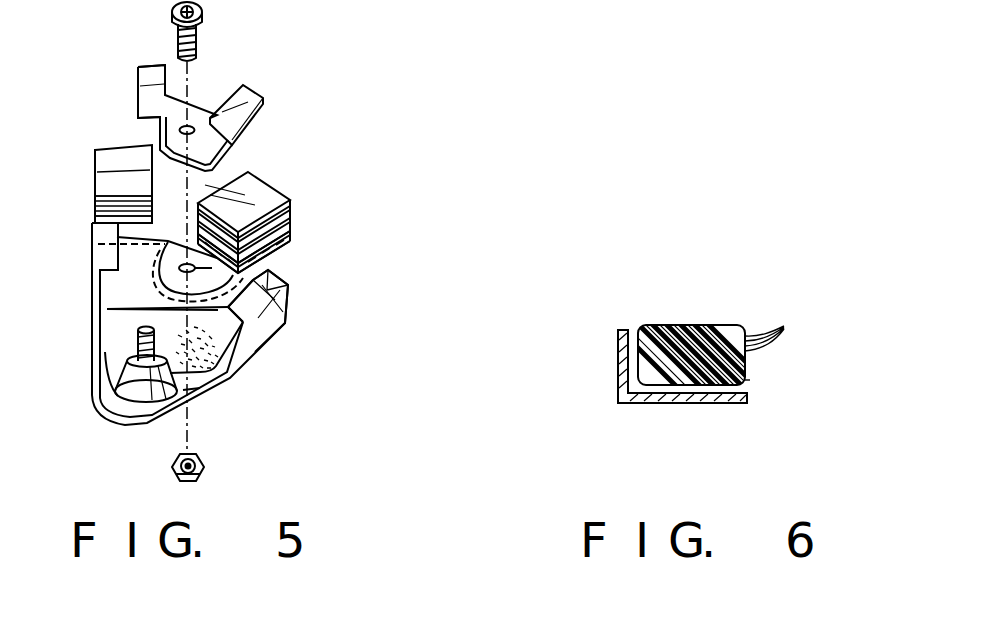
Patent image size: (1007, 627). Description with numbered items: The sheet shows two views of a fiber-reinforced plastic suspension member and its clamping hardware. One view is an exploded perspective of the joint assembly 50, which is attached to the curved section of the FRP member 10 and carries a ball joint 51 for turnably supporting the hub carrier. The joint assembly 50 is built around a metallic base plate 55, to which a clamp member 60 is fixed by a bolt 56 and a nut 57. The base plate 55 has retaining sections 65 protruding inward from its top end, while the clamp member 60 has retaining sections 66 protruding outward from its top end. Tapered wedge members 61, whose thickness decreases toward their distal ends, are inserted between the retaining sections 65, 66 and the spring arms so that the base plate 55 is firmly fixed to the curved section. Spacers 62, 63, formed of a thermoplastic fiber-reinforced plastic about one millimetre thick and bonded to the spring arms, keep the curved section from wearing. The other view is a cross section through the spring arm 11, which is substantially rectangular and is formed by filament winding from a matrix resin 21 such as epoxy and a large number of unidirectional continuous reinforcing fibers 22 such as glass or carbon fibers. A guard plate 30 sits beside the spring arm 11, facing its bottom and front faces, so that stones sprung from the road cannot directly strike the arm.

In FIG. 6, the FRP member 10 is at (740, 314).
In FIG. 6, the spring arm 11 is at (698, 323).
In FIG. 6, the matrix resin 21 is at (750, 381).
In FIG. 6, the unidirectional continuous reinforcing fibers 22 is at (784, 332).
In FIG. 6, the guard plate 30 is at (622, 373).
In FIG. 5, the joint assembly 50 is at (350, 233).
In FIG. 5, the ball joint 51 is at (124, 400).
In FIG. 5, the base plate 55 is at (243, 350).
In FIG. 5, the bolt 56 is at (197, 42).
In FIG. 5, the nut 57 is at (206, 468).
In FIG. 5, the clamp member 60 is at (230, 152).
In FIG. 5, the wedge member 61 is at (100, 180).
In FIG. 5, the spacer 62 is at (117, 322).
In FIG. 5, the spacer 63 is at (96, 223).
In FIG. 5, the retaining sections 65 is at (97, 250).
In FIG. 5, the retaining sections 66 is at (148, 88).